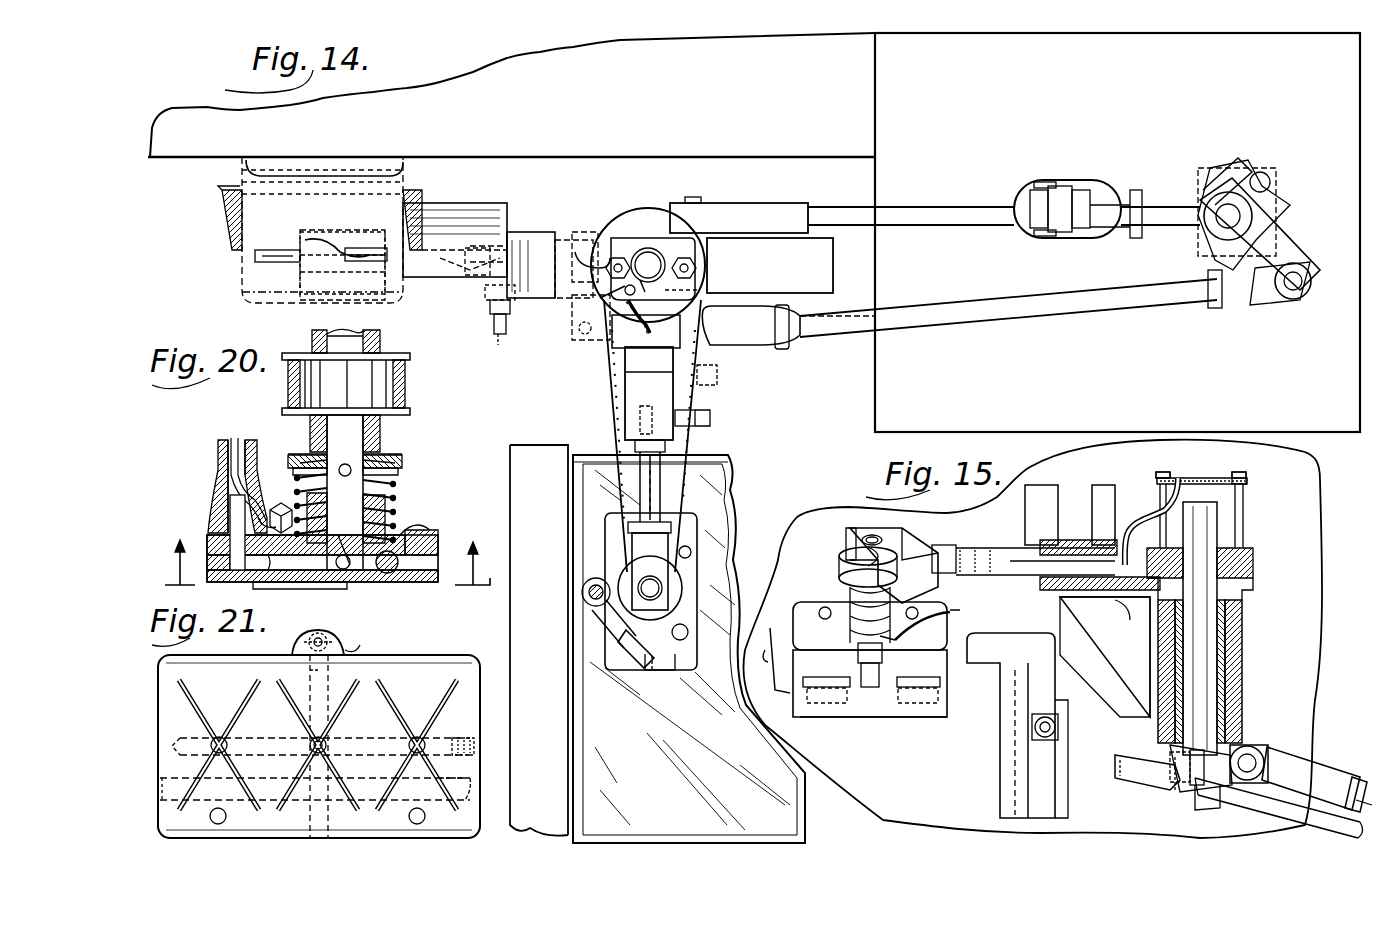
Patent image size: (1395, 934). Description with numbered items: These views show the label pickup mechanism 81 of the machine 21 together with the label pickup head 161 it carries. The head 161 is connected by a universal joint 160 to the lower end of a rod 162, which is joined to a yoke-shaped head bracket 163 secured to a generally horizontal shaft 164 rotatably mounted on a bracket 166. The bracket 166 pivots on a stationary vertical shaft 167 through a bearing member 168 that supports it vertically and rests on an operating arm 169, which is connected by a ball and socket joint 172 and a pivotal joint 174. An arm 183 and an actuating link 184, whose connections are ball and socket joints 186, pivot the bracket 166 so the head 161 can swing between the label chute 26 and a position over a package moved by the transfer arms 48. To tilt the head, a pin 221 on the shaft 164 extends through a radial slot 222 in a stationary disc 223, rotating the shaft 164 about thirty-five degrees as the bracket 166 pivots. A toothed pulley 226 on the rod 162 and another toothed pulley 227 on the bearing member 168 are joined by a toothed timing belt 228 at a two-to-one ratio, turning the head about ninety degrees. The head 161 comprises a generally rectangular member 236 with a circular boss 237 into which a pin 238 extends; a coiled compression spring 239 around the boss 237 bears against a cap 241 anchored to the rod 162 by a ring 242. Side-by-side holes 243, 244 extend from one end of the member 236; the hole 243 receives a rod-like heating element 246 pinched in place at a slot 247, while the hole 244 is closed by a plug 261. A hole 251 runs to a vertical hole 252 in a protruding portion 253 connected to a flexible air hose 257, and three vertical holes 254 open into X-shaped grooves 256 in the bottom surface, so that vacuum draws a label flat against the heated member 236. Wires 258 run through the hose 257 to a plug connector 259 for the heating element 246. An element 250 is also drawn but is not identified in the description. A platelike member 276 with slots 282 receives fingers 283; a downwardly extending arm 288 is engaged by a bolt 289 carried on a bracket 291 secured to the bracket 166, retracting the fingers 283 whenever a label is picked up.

In FIG. 20, the machine 21 is at (323, 554).
In FIG. 14, the label chute 26 is at (216, 210).
In FIG. 14, the transfer arms 48 is at (553, 480).
In FIG. 14, the mechanism 81 is at (745, 400).
In FIG. 20, the universal joint 160 is at (312, 460).
In FIG. 14, the label pickup head 161 is at (345, 178).
In FIG. 20, the label pickup head 161 is at (418, 475).
In FIG. 21, the label pickup head 161 is at (406, 652).
In FIG. 15, the label pickup head 161 is at (898, 720).
In FIG. 20, the rod 162 is at (360, 340).
In FIG. 15, the rod 162 is at (868, 535).
In FIG. 14, the head bracket 163 is at (300, 290).
In FIG. 20, the head bracket 163 is at (380, 430).
In FIG. 15, the head bracket 163 is at (916, 540).
In FIG. 14, the horizontal shaft 164 is at (660, 487).
In FIG. 15, the horizontal shaft 164 is at (990, 575).
In FIG. 14, the bracket 166 is at (630, 382).
In FIG. 15, the bracket 166 is at (1246, 620).
In FIG. 14, the stationary vertical shaft 167 is at (643, 262).
In FIG. 15, the stationary vertical shaft 167 is at (1205, 528).
In FIG. 15, the bearing member 168 is at (1225, 678).
In FIG. 14, the operating arm 169 is at (933, 205).
In FIG. 15, the operating arm 169 is at (1326, 770).
In FIG. 14, the ball and socket joint 172 is at (1252, 222).
In FIG. 14, the pivotal joint 174 is at (1052, 190).
In FIG. 14, the arm 183 is at (1280, 255).
In FIG. 14, the actuating link 184 is at (1045, 300).
In FIG. 15, the actuating link 184 is at (1272, 805).
In FIG. 14, the ball and socket joints 186 is at (1308, 298).
In FIG. 15, the ball and socket joints 186 is at (1108, 780).
In FIG. 14, the pin 221 is at (635, 330).
In FIG. 15, the pin 221 is at (1148, 478).
In FIG. 14, the radial slot 222 is at (639, 296).
In FIG. 15, the radial slot 222 is at (1236, 476).
In FIG. 14, the disc 223 is at (684, 245).
In FIG. 15, the disc 223 is at (1248, 482).
In FIG. 14, the toothed pulley 226 is at (682, 590).
In FIG. 20, the toothed pulley 226 is at (315, 372).
In FIG. 15, the toothed pulley 226 is at (840, 560).
In FIG. 14, the toothed pulley 227 is at (640, 213).
In FIG. 15, the toothed pulley 227 is at (1253, 556).
In FIG. 14, the toothed timing belt 228 is at (695, 395).
In FIG. 20, the toothed timing belt 228 is at (400, 372).
In FIG. 15, the toothed timing belt 228 is at (980, 548).
In FIG. 20, the rectangular member 236 is at (322, 570).
In FIG. 21, the rectangular member 236 is at (470, 660).
In FIG. 20, the circular boss 237 is at (398, 492).
In FIG. 20, the pin 238 is at (362, 577).
In FIG. 20, the coiled compression spring 239 is at (395, 518).
In FIG. 20, the cap 241 is at (398, 462).
In FIG. 20, the ring 242 is at (372, 452).
In FIG. 20, the hole 243 is at (392, 574).
In FIG. 21, the hole 243 is at (278, 776).
In FIG. 20, the hole 244 is at (341, 580).
In FIG. 21, the hole 244 is at (273, 735).
In FIG. 20, the heating element 246 is at (435, 567).
In FIG. 20, the slot 247 is at (440, 550).
In FIG. 20, the ball 250 is at (359, 580).
In FIG. 20, the hole 251 is at (248, 572).
In FIG. 21, the hole 251 is at (310, 668).
In FIG. 20, the vertical hole 252 is at (216, 476).
In FIG. 21, the vertical hole 252 is at (296, 640).
In FIG. 20, the protruding portion 253 is at (210, 538).
In FIG. 21, the protruding portion 253 is at (370, 640).
In FIG. 21, the vertical holes 254 is at (220, 740).
In FIG. 21, the grooves 256 is at (338, 770).
In FIG. 14, the flexible air hose 257 is at (586, 600).
In FIG. 20, the flexible air hose 257 is at (220, 440).
In FIG. 20, the wires 258 is at (238, 440).
In FIG. 20, the plug connector 259 is at (282, 503).
In FIG. 15, the plug connector 259 is at (930, 648).
In FIG. 21, the plug 261 is at (456, 731).
In FIG. 14, the platelike member 276 is at (393, 302).
In FIG. 14, the slots 282 is at (292, 240).
In FIG. 14, the fingers 283 is at (258, 258).
In FIG. 14, the arm 288 is at (510, 250).
In FIG. 15, the arm 288 is at (1005, 797).
In FIG. 14, the bolt 289 is at (500, 336).
In FIG. 15, the bolt 289 is at (1055, 727).
In FIG. 15, the bracket 291 is at (1040, 762).